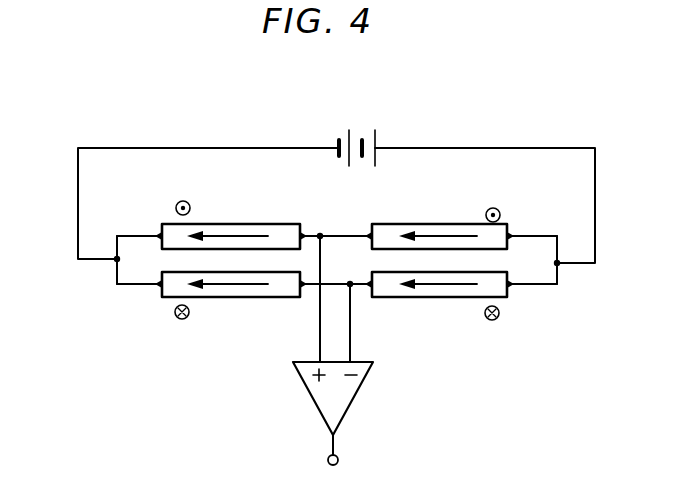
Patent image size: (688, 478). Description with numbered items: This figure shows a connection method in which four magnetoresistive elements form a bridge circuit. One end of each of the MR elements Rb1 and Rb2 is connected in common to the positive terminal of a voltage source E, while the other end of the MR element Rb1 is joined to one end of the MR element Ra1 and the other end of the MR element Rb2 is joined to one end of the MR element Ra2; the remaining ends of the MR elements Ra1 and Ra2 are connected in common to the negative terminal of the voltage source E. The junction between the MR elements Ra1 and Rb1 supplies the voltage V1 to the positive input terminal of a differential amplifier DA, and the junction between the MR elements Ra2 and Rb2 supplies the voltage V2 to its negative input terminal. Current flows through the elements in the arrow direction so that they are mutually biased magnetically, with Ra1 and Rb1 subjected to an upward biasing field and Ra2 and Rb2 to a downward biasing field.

The voltage source E is at (356, 135).
The MR element Ra1 is at (241, 224).
The MR element Ra2 is at (241, 298).
The MR element Rb1 is at (421, 224).
The MR element Rb2 is at (420, 298).
The first bridge output voltage V1 is at (303, 299).
The second bridge output voltage V2 is at (366, 323).
The differential amplifier DA is at (362, 380).